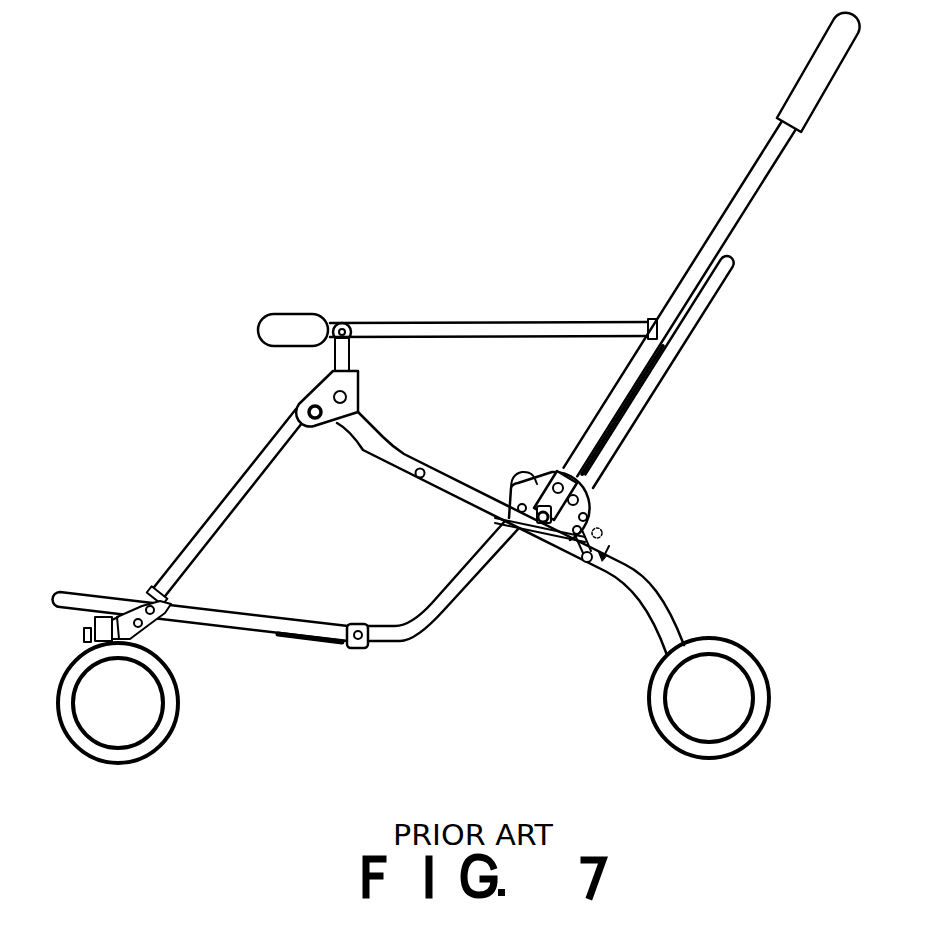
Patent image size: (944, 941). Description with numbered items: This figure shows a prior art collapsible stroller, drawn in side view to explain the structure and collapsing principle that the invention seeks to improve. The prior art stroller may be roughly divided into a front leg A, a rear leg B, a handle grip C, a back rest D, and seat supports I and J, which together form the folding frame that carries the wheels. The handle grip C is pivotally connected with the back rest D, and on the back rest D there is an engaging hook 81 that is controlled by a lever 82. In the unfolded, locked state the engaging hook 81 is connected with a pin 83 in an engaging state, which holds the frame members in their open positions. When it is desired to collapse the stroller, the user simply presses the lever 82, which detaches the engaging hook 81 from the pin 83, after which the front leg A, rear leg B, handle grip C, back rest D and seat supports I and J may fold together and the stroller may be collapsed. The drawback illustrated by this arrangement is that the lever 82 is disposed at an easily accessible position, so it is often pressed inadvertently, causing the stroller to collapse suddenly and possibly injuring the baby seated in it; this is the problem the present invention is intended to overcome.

The front leg A is at (244, 492).
The rear leg B is at (645, 604).
The handle grip C is at (723, 213).
The back rest D is at (620, 432).
The seat support I is at (427, 618).
The seat support J is at (262, 622).
The engaging hook 81 is at (512, 487).
The lever 82 is at (566, 556).
The pin 83 is at (509, 516).